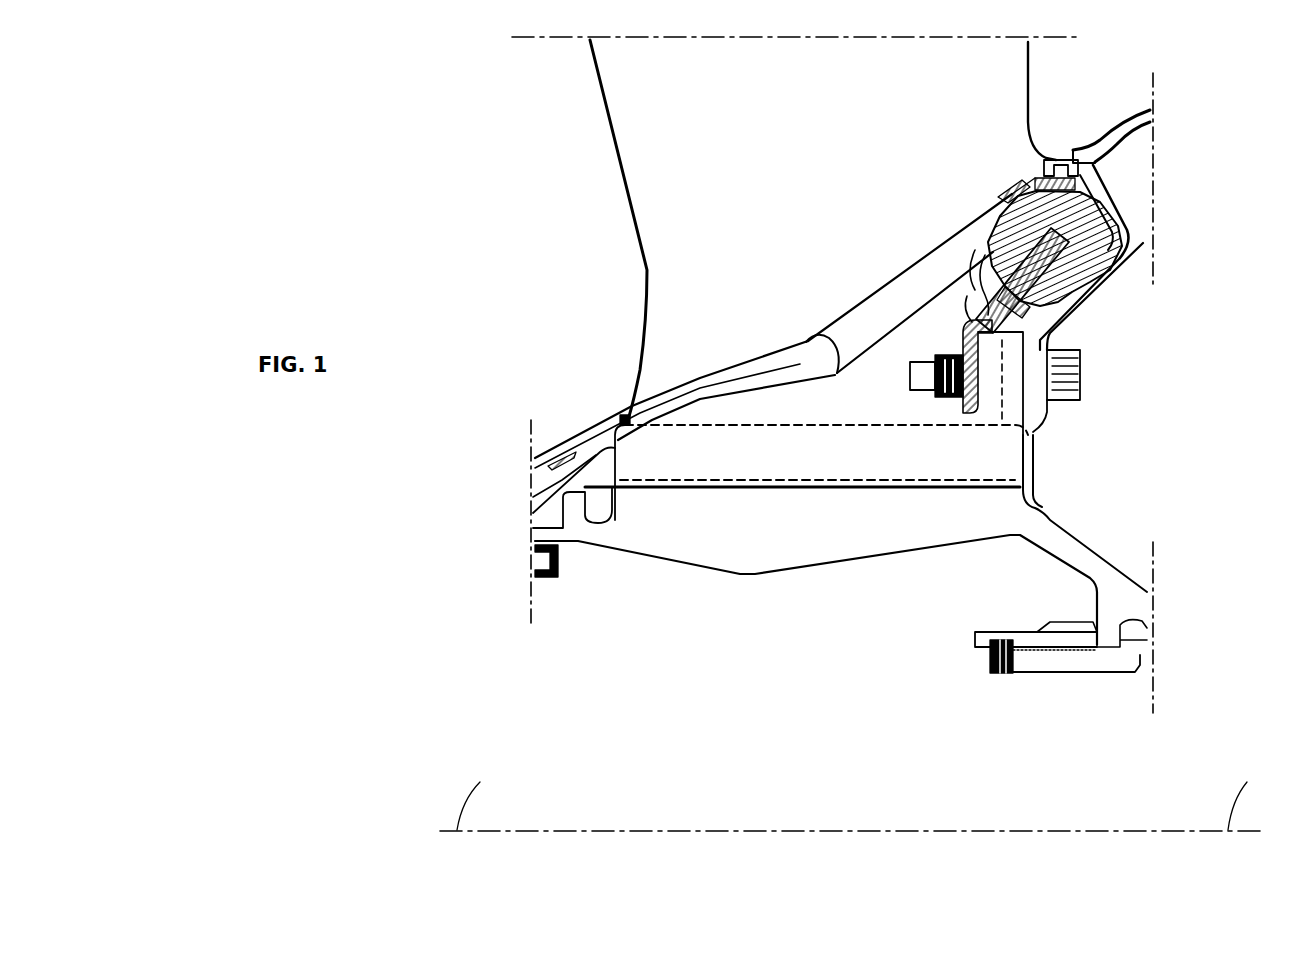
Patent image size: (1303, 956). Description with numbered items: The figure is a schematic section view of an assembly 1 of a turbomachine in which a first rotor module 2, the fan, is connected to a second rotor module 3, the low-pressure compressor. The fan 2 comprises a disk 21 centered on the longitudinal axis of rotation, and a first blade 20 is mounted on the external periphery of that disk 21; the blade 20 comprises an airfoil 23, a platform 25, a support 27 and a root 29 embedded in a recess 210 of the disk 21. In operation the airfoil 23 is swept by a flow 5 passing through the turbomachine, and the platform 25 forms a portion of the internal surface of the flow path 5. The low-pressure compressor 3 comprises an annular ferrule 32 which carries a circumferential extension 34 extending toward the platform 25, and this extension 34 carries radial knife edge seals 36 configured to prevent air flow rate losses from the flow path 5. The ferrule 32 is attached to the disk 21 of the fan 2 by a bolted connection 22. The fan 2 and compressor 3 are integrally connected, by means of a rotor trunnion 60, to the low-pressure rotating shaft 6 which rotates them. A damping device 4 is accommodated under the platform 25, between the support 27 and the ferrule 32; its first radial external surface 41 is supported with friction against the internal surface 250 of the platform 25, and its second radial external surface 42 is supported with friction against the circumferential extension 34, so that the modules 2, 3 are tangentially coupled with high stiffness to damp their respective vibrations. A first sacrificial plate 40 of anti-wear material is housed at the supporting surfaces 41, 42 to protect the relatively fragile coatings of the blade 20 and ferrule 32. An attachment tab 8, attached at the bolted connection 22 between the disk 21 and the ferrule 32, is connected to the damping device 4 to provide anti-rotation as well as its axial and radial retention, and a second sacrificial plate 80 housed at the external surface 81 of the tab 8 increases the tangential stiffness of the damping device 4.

The assembly 1 is at (1203, 122).
The first rotor module 2 is at (783, 576).
The second rotor module 3 is at (1154, 305).
The damping device 4 is at (1042, 227).
The flow 5 is at (1084, 92).
The rotating shaft 6 is at (1068, 660).
The attachment tab 8 is at (1014, 293).
The first blade 20 is at (746, 255).
The disk 21 is at (795, 535).
The bolted connection 22 is at (936, 400).
The airfoil 23 is at (795, 160).
The platform 25 is at (873, 273).
The support 27 is at (995, 370).
The root 29 is at (795, 462).
The annular ferrule 32 is at (1087, 292).
The circumferential extension 34 is at (1110, 203).
The radial knife edge seals 36 is at (1095, 164).
The first sacrificial plate 40 is at (1040, 188).
The first radial external surface 41 is at (1019, 186).
The second radial external surface 42 is at (1066, 176).
The rotor trunnion 60 is at (1076, 558).
The second sacrificial plate 80 is at (1012, 290).
The external surface 81 is at (982, 312).
The recess 210 is at (606, 478).
The internal surface 250 is at (997, 242).